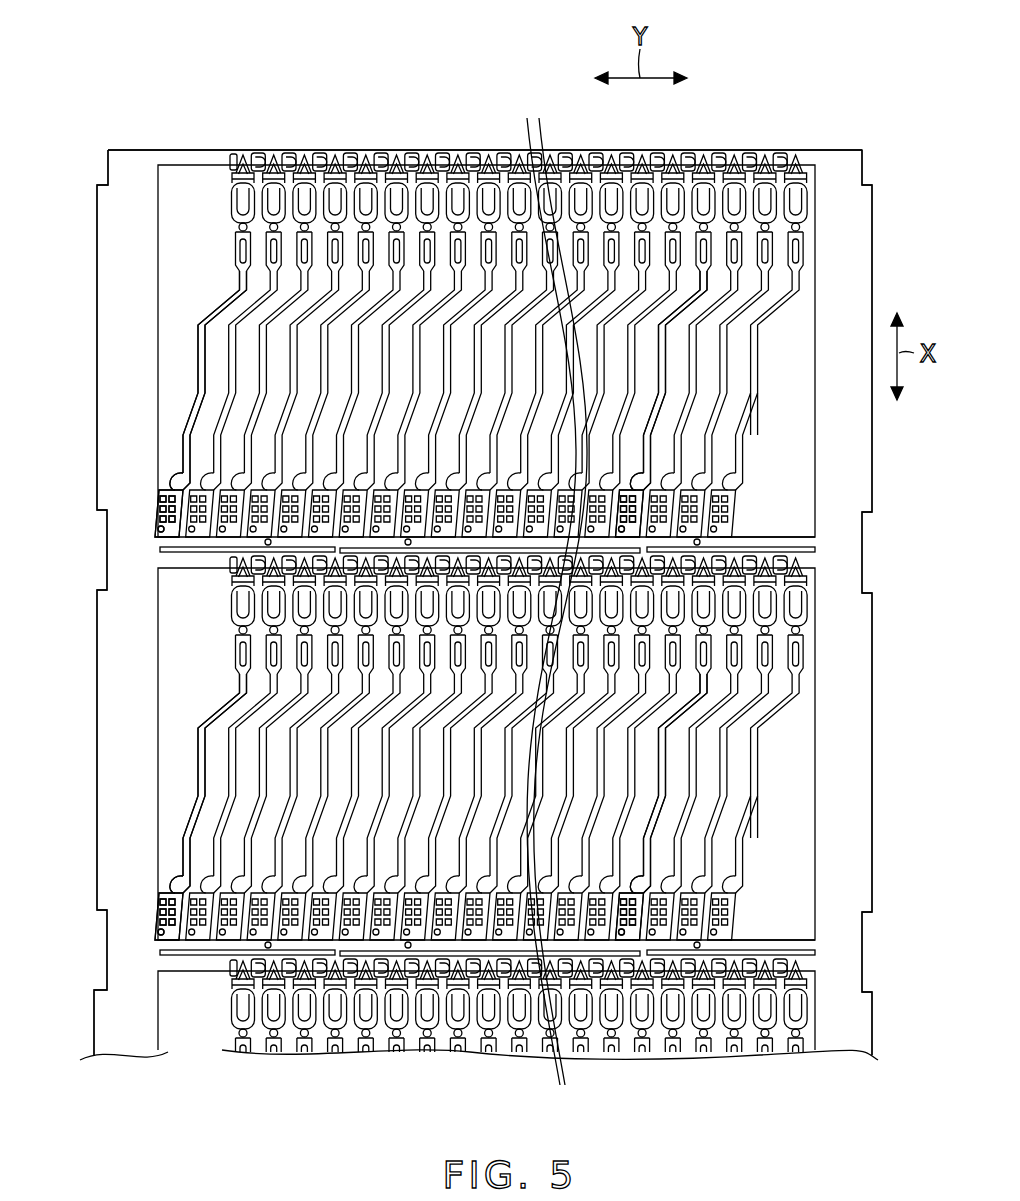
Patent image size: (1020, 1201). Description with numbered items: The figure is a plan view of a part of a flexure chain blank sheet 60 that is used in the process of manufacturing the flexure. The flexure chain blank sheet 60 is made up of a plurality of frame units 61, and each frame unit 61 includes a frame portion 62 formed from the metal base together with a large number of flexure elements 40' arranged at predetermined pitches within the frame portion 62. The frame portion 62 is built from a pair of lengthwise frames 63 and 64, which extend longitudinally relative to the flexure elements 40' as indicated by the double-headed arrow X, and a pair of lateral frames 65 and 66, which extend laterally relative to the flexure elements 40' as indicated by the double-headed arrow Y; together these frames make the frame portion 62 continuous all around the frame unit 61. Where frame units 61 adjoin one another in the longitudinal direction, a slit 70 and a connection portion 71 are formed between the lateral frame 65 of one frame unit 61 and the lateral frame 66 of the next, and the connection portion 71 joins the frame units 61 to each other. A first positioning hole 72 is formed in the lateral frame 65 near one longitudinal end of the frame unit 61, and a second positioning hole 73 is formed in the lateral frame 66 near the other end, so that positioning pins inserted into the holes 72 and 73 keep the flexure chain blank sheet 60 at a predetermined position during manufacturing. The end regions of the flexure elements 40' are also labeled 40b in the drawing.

The flexure chain blank sheet 60 is at (390, 74).
The frame unit 61 is at (88, 440).
The frame portion 62 is at (203, 145).
The lengthwise frame 63 is at (863, 263).
The lengthwise frame 64 is at (115, 290).
The lateral frame 65 is at (785, 549).
The lateral frame 66 is at (700, 153).
The slit 70 is at (778, 542).
The connection portion 71 is at (165, 500).
The first positioning hole 72 is at (728, 521).
The second positioning hole 73 is at (780, 153).
The flexure element 40' is at (482, 585).
The wiring end portion 40b is at (748, 456).